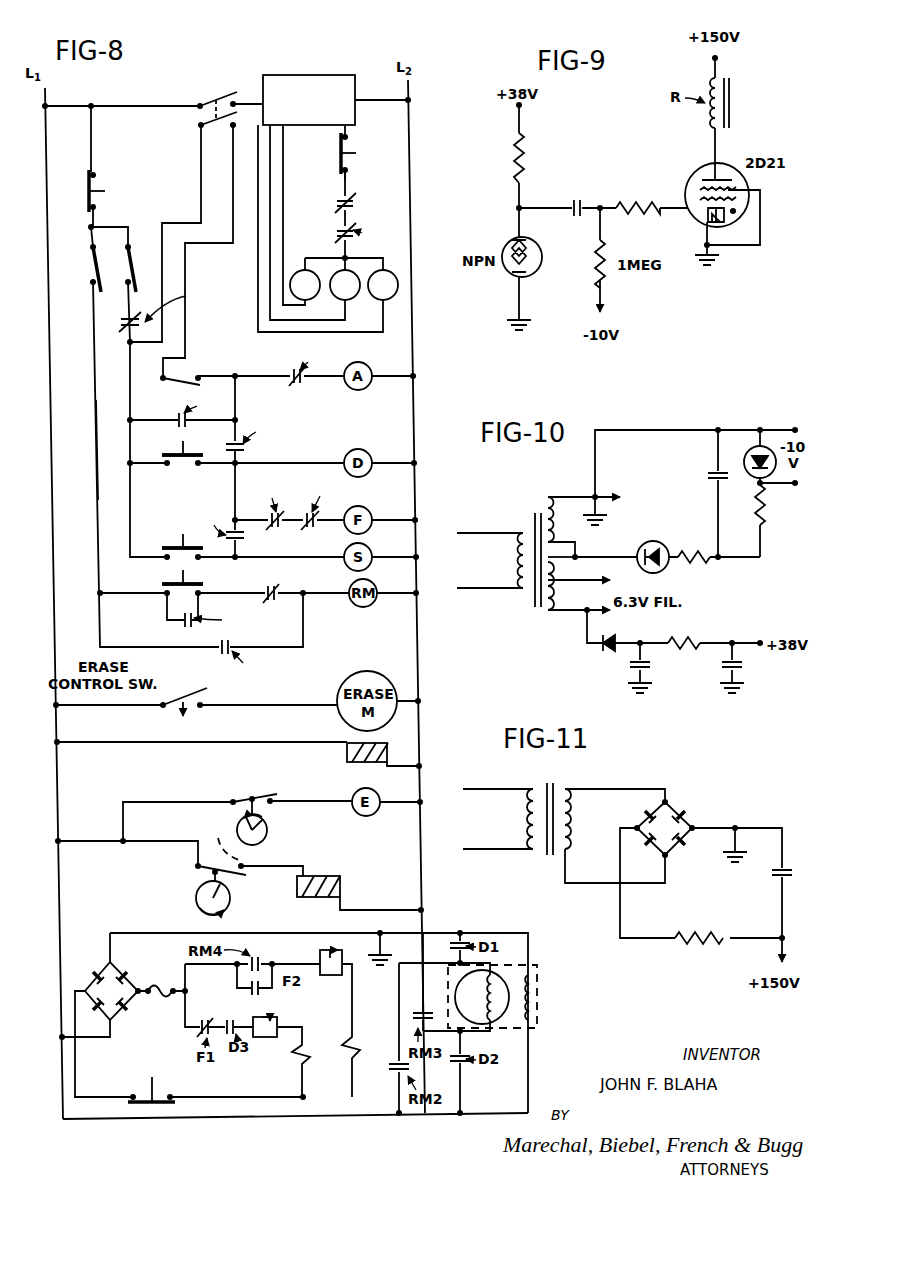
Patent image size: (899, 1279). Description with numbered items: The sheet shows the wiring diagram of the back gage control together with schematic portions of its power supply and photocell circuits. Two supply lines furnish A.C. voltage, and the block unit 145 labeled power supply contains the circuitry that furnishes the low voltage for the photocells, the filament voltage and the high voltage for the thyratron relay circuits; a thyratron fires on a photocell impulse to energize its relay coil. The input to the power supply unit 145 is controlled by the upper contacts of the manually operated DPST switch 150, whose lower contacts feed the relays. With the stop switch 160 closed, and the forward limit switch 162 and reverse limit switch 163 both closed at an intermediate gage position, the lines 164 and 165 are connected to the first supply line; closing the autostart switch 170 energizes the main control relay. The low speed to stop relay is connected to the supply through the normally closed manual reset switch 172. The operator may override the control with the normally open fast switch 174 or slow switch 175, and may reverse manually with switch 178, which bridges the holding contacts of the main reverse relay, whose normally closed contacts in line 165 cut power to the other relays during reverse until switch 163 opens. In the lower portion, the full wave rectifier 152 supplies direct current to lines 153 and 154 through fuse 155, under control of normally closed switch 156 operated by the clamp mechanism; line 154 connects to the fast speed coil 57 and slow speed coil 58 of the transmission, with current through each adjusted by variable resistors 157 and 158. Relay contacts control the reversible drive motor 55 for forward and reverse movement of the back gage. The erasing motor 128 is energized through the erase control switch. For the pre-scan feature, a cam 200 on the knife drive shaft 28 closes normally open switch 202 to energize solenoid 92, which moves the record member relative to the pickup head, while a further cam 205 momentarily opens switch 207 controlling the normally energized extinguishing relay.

The power supply unit 145 is at (288, 76).
The DPST switch 150 is at (206, 100).
The stop switch 160 is at (103, 178).
The forward limit switch 162 is at (137, 244).
The reverse limit switch 163 is at (92, 280).
The line 164 is at (97, 436).
The line 165 is at (128, 310).
The autostart switch 170 is at (187, 378).
The manual reset switch 172 is at (353, 151).
The fast switch 174 is at (178, 468).
The slow switch 175 is at (170, 546).
The manual reverse switch 178 is at (192, 584).
The motor 128 is at (344, 686).
The switch 207 is at (236, 800).
The drive shaft 28 is at (203, 826).
The cam 205 is at (268, 836).
The solenoid 92 is at (340, 874).
The cam 200 is at (196, 906).
The switch 202 is at (238, 882).
The full wave rectifier 152 is at (136, 976).
The fuse 155 is at (158, 996).
The line 153 is at (76, 1056).
The line 154 is at (177, 996).
The normally closed switch 156 is at (142, 1108).
The variable resistor 157 is at (318, 952).
The variable resistor 158 is at (286, 1022).
The fast speed coil 57 is at (358, 1046).
The slow speed coil 58 is at (292, 1058).
The reversible electric motor 55 is at (540, 990).